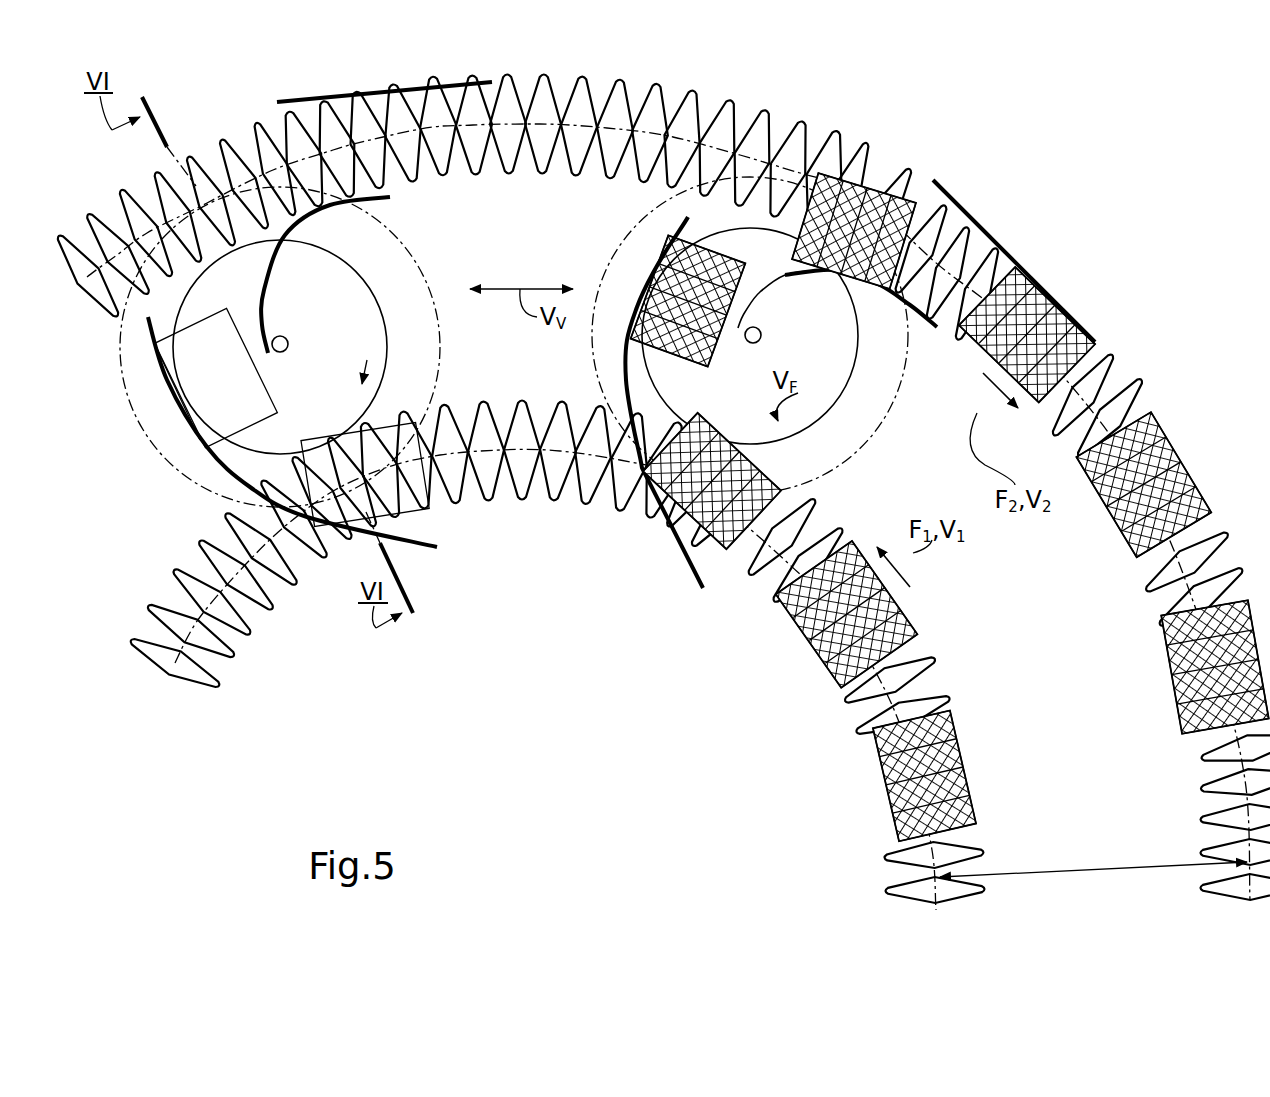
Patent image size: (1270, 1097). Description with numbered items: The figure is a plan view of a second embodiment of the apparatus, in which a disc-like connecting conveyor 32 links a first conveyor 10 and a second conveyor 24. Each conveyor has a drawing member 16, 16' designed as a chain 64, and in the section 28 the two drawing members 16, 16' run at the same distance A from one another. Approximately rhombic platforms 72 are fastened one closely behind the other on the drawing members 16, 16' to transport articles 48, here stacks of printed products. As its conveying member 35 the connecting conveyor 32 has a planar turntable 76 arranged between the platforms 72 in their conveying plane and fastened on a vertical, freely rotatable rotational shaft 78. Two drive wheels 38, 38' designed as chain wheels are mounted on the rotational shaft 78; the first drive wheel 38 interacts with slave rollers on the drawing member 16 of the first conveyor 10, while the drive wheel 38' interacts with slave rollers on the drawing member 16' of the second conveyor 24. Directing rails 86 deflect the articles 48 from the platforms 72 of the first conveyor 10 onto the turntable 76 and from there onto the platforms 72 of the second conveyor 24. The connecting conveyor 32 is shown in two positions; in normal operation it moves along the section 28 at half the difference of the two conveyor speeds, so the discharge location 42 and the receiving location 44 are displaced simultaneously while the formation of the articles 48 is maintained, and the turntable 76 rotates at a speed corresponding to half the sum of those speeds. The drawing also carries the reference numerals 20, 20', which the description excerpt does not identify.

The first conveyor 10 is at (877, 861).
The drawing member 16 is at (191, 654).
The drawing member 16' is at (115, 276).
The inner transfer path 20 is at (806, 590).
The outer transfer path 20' is at (1042, 435).
The second conveyor 24 is at (1136, 332).
The section 28 is at (148, 554).
The connecting conveyor 32 is at (412, 277).
The conveying member 35 is at (640, 362).
The drive wheel 38 is at (764, 335).
The drive wheel 38' is at (908, 470).
The discharge location 42 is at (672, 508).
The receiving location 44 is at (803, 173).
The articles 48 is at (873, 772).
The chains 64 is at (212, 623).
The platforms 72 is at (653, 107).
The turntable 76 is at (838, 334).
The rotational shaft 78 is at (762, 333).
The directing rails 86 is at (317, 98).
The distance A is at (1080, 870).